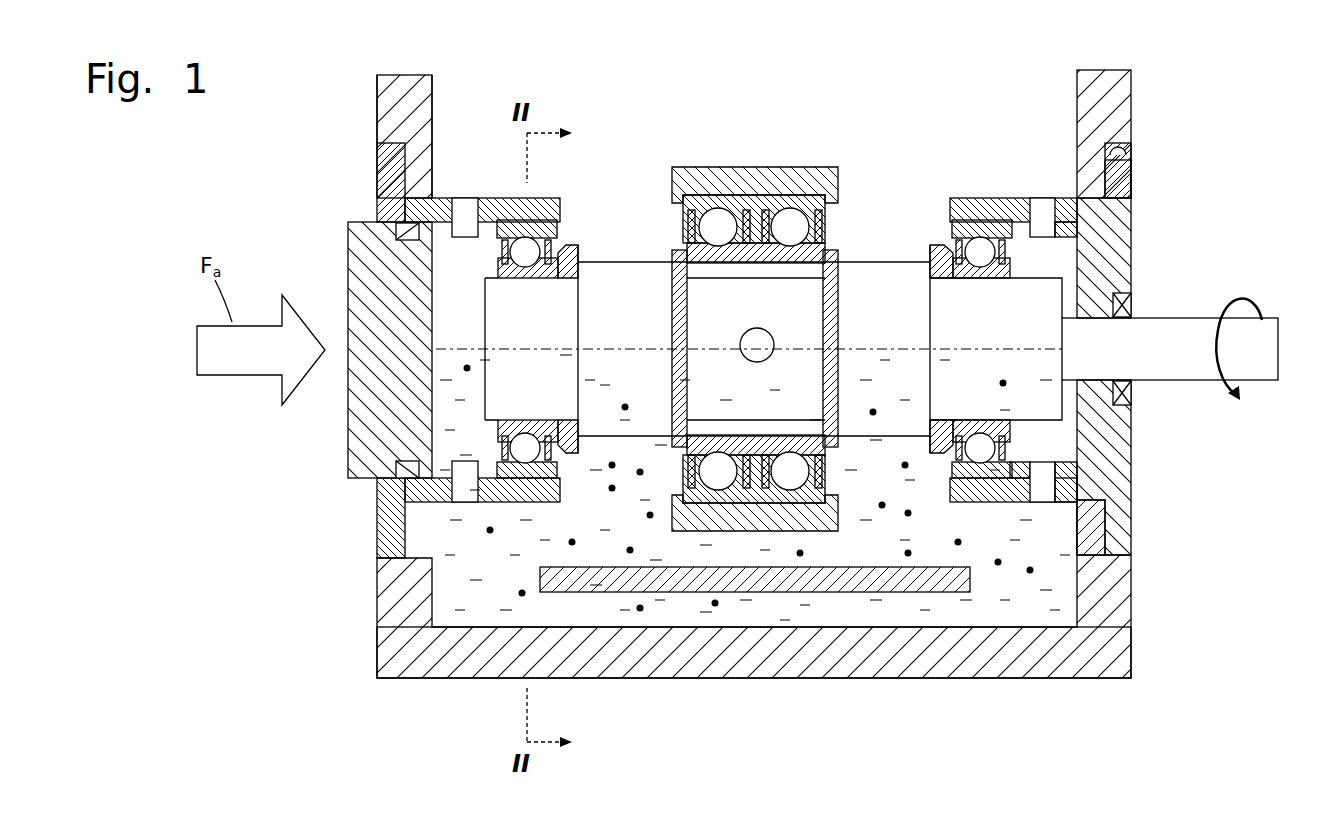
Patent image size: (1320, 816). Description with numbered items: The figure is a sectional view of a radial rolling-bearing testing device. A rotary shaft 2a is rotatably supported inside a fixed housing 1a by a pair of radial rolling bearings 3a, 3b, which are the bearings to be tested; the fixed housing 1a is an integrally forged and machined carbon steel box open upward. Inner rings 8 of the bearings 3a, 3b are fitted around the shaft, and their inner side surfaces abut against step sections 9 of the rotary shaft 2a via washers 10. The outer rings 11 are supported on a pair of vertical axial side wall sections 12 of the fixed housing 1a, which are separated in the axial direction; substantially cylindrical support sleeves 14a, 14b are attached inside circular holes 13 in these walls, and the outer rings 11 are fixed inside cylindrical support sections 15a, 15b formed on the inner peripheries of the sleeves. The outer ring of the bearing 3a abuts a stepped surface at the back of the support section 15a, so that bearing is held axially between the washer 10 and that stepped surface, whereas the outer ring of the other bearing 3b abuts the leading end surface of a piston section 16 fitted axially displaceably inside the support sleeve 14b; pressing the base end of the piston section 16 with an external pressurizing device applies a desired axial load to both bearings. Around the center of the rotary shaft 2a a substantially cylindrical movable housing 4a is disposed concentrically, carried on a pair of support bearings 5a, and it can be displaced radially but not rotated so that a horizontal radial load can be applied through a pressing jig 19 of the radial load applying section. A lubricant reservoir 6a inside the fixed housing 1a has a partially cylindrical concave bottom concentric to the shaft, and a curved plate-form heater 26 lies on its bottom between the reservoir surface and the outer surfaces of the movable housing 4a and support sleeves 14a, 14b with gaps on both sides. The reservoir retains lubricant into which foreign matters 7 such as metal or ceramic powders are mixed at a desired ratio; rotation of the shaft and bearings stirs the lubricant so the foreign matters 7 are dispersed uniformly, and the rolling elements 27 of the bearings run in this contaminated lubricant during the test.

The fixed housing 1a is at (440, 93).
The rotary shaft 2a is at (1195, 368).
The radial rolling bearing 3a is at (995, 252).
The radial rolling bearing 3b is at (532, 250).
The movable housing 4a is at (756, 182).
The support bearing 5a is at (783, 503).
The lubricant reservoir 6a is at (1040, 613).
The foreign matters 7 is at (715, 605).
The inner ring 8 is at (510, 422).
The step section 9 is at (548, 447).
The washer 10 is at (578, 260).
The outer ring 11 is at (512, 502).
The axial side wall section 12 is at (402, 97).
The circular hole 13 is at (378, 153).
The support sleeve 14a is at (1125, 186).
The support sleeve 14b is at (380, 518).
The support section 15a is at (988, 222).
The support section 15b is at (548, 210).
The piston section 16 is at (354, 430).
The pressing jig 19 is at (768, 335).
The heater 26 is at (860, 593).
The ball 27 is at (527, 250).